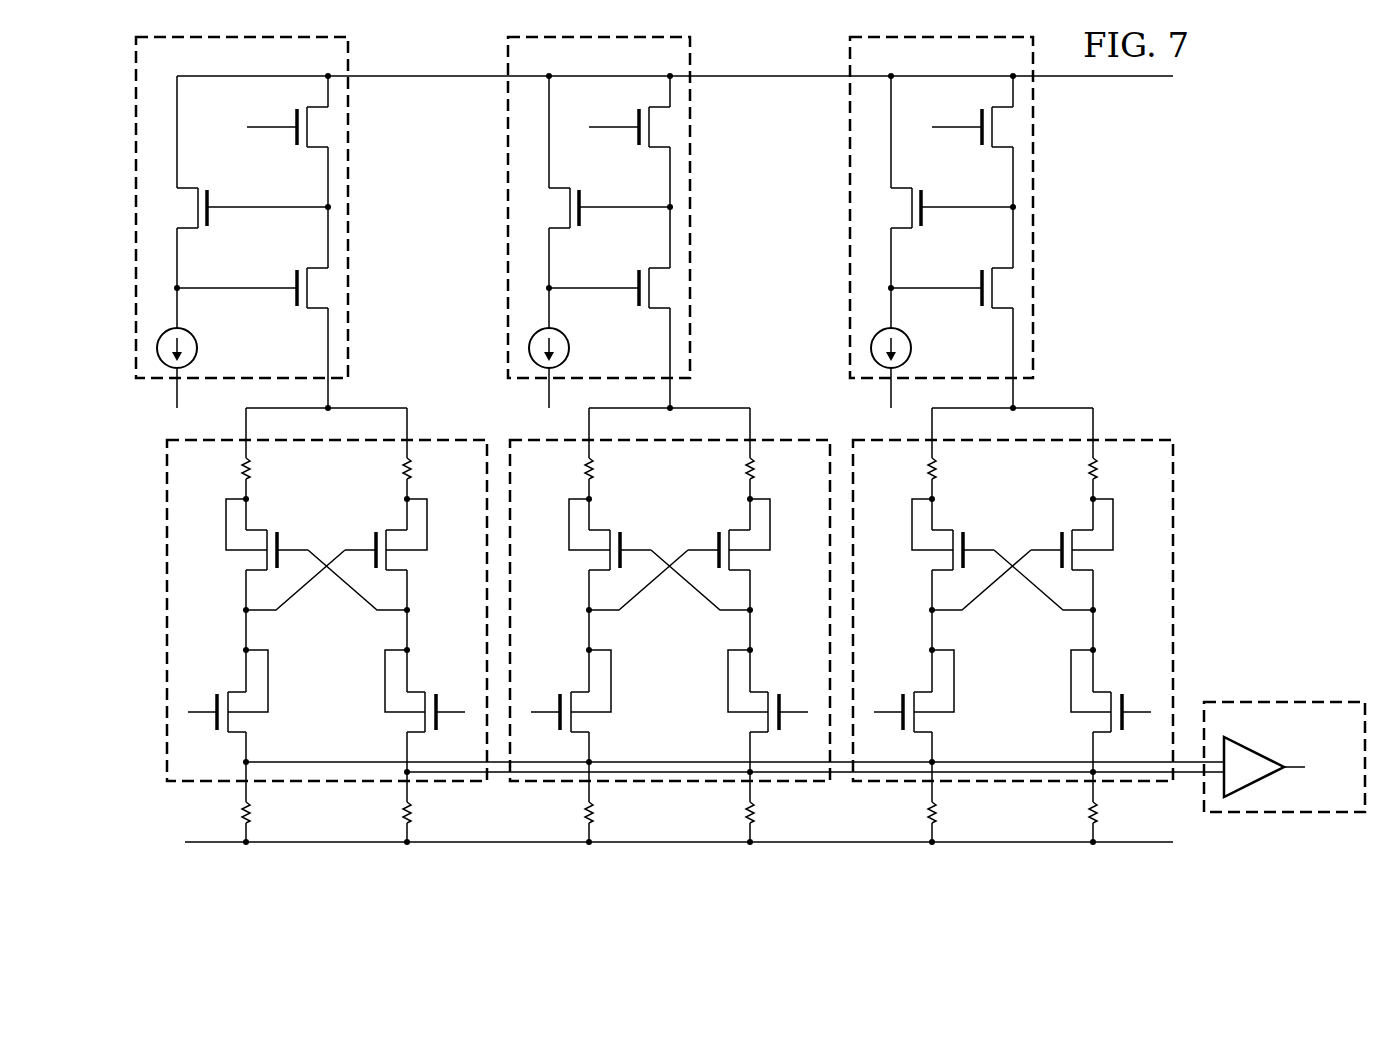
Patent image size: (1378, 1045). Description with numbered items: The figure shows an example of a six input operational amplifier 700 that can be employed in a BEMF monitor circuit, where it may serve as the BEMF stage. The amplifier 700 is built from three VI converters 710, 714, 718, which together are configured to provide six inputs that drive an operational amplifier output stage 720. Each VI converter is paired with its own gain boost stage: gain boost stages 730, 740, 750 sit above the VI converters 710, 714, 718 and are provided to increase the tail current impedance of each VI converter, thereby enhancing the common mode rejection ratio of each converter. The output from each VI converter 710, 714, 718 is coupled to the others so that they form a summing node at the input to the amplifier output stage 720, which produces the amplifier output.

The six input operational amplifier 700 is at (1289, 112).
The VI converter 710 is at (437, 437).
The VI converter 714 is at (673, 613).
The VI converter 718 is at (1016, 613).
The operational amplifier output stage 720 is at (1335, 698).
The gain boost stage 730 is at (353, 206).
The gain boost stage 740 is at (695, 206).
The gain boost stage 750 is at (1038, 206).